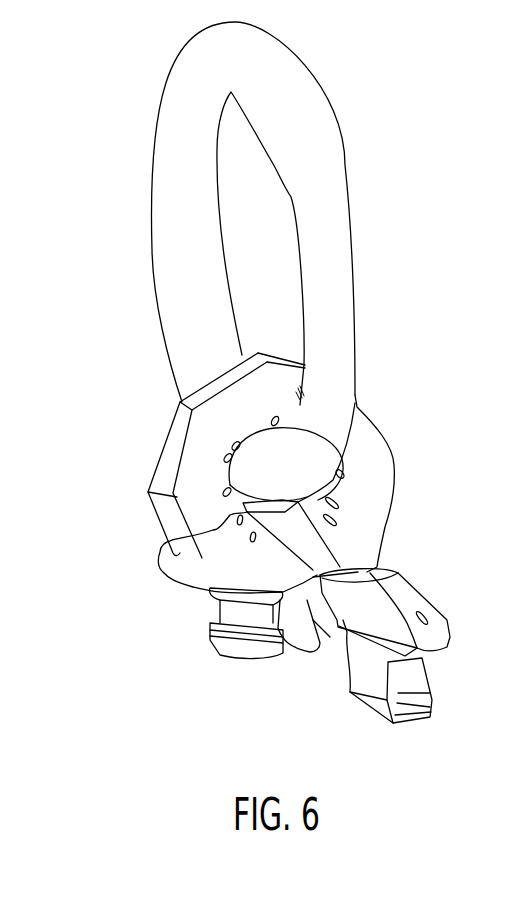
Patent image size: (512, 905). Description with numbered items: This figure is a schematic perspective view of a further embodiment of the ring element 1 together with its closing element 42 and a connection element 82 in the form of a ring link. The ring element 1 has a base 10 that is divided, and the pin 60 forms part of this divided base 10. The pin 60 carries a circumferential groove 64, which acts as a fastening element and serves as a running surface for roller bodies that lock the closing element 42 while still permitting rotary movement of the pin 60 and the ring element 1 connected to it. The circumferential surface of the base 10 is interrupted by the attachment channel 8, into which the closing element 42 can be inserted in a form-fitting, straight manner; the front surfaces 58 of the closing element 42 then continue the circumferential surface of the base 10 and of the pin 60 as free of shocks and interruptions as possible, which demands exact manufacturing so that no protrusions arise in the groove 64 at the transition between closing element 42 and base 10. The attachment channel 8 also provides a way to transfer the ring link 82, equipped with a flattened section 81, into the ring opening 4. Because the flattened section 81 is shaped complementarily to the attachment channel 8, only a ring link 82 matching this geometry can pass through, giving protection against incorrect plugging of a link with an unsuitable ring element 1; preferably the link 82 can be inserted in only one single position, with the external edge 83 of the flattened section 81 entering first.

The ring element 1 is at (422, 458).
The ring opening 4 is at (172, 540).
The attachment channel 8 is at (300, 657).
The base 10 is at (188, 645).
The closing element 42 is at (433, 593).
The front surfaces 58 is at (333, 660).
The pin 60 is at (218, 660).
The groove 64 is at (210, 608).
The flattened section 81 is at (330, 263).
The connection element 82 is at (362, 178).
The external edge 83 is at (327, 313).